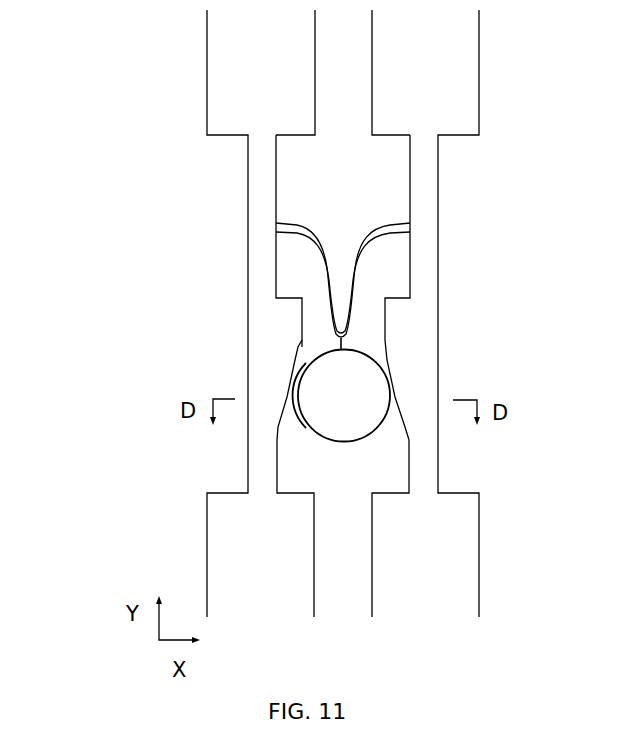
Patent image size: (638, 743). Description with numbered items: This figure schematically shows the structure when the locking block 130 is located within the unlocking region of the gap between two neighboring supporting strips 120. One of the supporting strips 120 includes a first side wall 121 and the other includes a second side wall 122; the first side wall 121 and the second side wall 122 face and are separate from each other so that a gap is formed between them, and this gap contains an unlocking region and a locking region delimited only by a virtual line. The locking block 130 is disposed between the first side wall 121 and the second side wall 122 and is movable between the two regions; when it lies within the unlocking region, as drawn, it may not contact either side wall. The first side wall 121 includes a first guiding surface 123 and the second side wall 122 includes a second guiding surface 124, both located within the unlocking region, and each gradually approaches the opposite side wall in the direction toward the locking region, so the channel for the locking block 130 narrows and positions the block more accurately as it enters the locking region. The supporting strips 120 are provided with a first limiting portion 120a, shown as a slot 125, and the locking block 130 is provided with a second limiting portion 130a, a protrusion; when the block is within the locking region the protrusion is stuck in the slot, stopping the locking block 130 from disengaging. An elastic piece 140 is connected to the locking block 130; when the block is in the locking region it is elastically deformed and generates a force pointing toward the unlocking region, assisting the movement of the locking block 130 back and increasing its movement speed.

The supporting strip 120 is at (231, 75).
The first limiting portion 120a is at (300, 338).
The slot 125 is at (204, 241).
The first side wall 121 is at (277, 458).
The second side wall 122 is at (412, 458).
The first guiding surface 123 is at (294, 372).
The second guiding surface 124 is at (392, 372).
The locking block 130 is at (372, 410).
The second limiting portion 130a is at (294, 400).
The elastic piece 140 is at (315, 238).